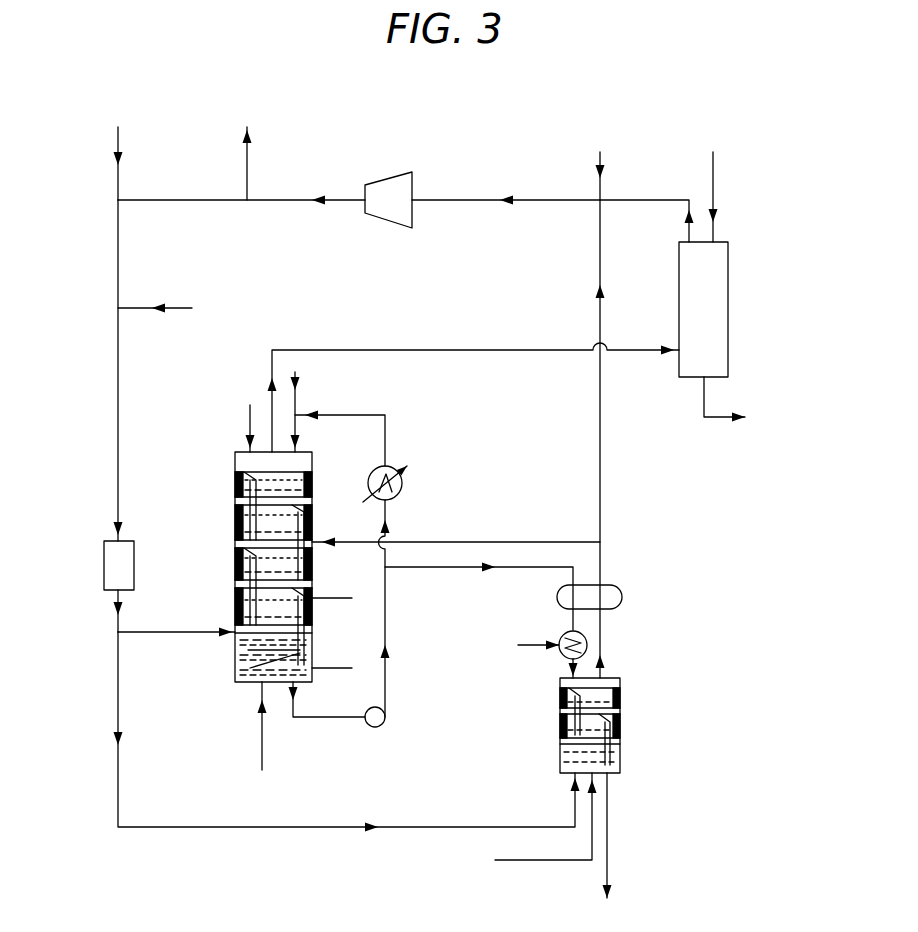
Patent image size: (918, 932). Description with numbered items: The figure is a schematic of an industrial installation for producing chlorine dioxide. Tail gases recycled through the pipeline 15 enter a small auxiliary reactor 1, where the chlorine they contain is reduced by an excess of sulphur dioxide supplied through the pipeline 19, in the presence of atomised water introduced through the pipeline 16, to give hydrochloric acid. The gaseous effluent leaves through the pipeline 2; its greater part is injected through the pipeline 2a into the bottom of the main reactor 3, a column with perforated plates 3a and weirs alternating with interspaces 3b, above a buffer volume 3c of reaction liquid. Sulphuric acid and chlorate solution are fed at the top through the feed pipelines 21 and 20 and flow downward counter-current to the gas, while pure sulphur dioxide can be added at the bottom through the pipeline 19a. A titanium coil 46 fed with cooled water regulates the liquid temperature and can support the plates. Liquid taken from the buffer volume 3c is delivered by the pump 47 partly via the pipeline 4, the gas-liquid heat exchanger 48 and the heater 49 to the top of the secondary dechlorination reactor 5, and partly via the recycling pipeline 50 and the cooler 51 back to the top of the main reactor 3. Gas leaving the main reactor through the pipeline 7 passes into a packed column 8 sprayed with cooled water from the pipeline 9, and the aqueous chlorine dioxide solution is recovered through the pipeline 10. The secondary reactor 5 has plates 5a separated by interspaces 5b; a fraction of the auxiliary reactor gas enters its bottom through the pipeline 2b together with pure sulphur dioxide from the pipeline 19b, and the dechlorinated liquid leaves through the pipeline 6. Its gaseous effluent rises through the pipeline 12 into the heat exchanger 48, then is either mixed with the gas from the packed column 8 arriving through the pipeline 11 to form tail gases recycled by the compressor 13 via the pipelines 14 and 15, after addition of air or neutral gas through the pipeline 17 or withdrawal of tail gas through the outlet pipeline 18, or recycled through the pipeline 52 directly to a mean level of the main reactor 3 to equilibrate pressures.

The auxiliary reactor 1 is at (127, 583).
The pipeline 2 is at (122, 629).
The pipeline 2a is at (190, 634).
The pipeline 2b is at (203, 826).
The main reactor 3 is at (235, 466).
The perforated plates 3a is at (240, 531).
The interspaces 3b is at (242, 586).
The buffer volume 3c is at (250, 669).
The pipeline 4 is at (445, 568).
The secondary dechlorination reactor 5 is at (622, 684).
The plates 5a is at (622, 729).
The interspaces 5b is at (563, 717).
The pipeline 6 is at (608, 793).
The pipeline 7 is at (373, 349).
The packed column 8 is at (712, 324).
The pipeline 9 is at (713, 159).
The pipeline 10 is at (717, 421).
The pipeline 11 is at (658, 207).
The pipeline 12 is at (602, 442).
The compressor 13 is at (380, 188).
The pipeline 14 is at (277, 199).
The pipeline 15 is at (118, 265).
The pipeline 16 is at (118, 148).
The pipeline 17 is at (600, 158).
The outlet pipeline 18 is at (247, 132).
The pipeline 19 is at (185, 306).
The pipeline 19a is at (262, 739).
The pipeline 19b is at (542, 862).
The feed pipeline 20 is at (298, 392).
The feed pipeline 21 is at (250, 413).
The titanium coil 46 is at (336, 598).
The pump 47 is at (382, 724).
The gas-liquid heat exchanger 48 is at (557, 598).
The heater 49 is at (560, 653).
The recycling pipeline 50 is at (388, 520).
The cooler 51 is at (394, 468).
The pipeline 52 is at (505, 531).